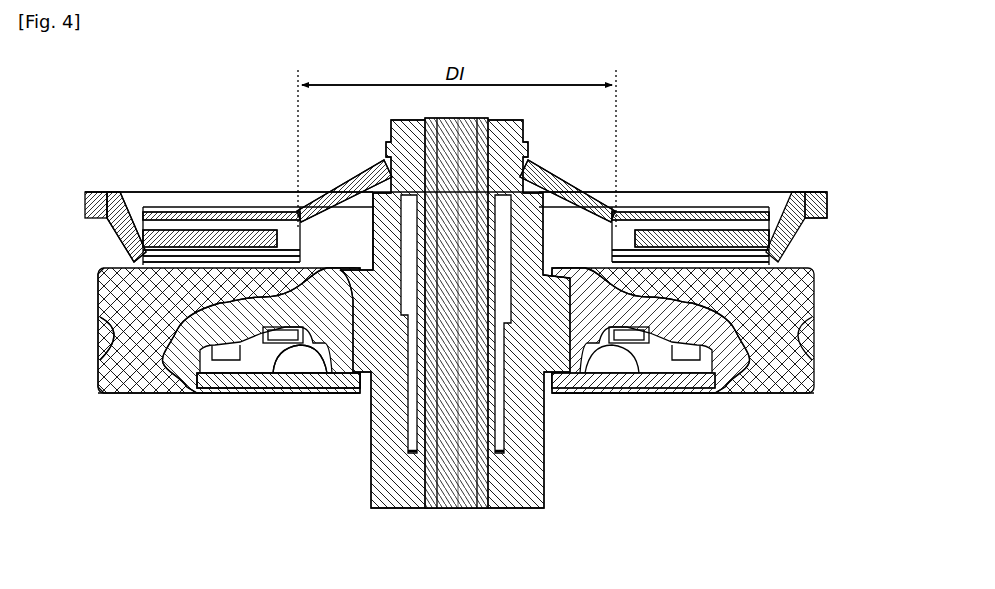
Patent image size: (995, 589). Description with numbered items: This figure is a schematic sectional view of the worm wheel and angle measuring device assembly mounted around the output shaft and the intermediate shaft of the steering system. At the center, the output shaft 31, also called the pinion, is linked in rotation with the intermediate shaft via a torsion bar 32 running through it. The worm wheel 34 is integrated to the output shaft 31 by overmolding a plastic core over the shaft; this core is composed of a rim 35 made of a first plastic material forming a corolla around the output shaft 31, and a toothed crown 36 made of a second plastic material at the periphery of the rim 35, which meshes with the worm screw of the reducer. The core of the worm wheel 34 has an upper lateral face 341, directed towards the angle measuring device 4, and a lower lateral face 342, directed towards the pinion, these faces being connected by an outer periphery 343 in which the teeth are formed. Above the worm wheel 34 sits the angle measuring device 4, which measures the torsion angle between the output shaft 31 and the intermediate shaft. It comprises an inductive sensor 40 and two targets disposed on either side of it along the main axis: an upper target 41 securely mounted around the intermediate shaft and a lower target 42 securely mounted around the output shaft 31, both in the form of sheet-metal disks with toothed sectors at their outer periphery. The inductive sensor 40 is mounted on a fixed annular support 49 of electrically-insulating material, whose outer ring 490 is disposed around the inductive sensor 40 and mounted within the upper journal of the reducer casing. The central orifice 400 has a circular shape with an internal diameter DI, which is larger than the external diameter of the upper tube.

The angle measuring device 4 is at (828, 248).
The output shaft 31 is at (538, 470).
The torsion bar 32 is at (459, 508).
The worm wheel 34 is at (818, 333).
The rim 35 is at (186, 392).
The toothed crown 36 is at (142, 368).
The inductive sensor 40 is at (172, 200).
The upper target 41 is at (284, 205).
The lower target 42 is at (231, 210).
The annular support 49 is at (135, 205).
The upper lateral face 341 is at (118, 255).
The lower lateral face 342 is at (293, 398).
The outer periphery 343 is at (96, 285).
The central orifice 400 is at (340, 226).
The outer ring 490 is at (815, 203).